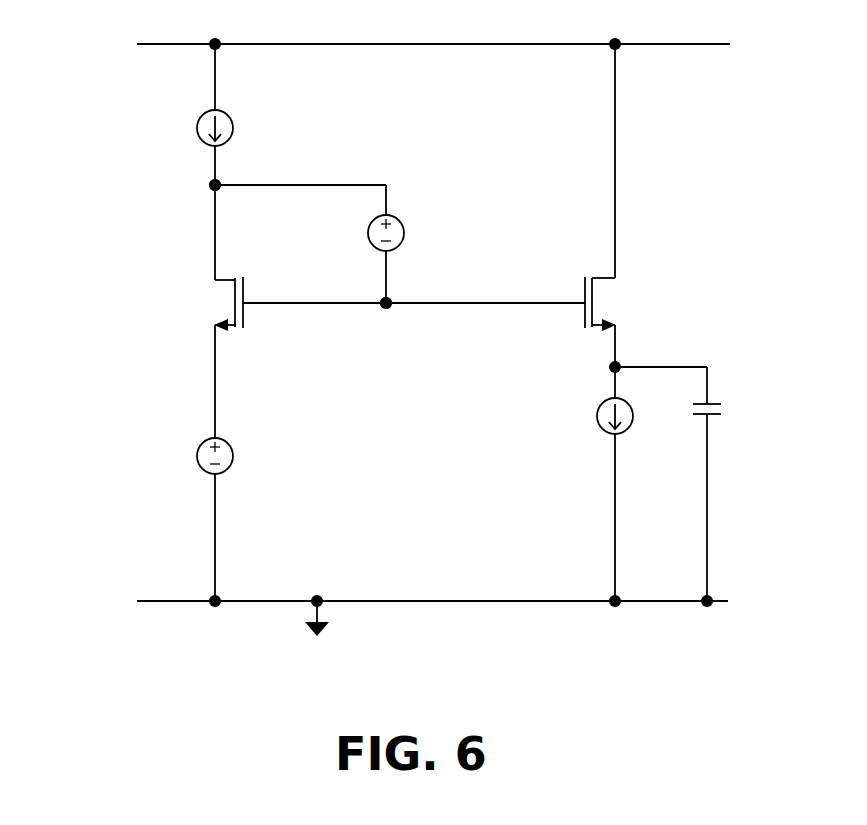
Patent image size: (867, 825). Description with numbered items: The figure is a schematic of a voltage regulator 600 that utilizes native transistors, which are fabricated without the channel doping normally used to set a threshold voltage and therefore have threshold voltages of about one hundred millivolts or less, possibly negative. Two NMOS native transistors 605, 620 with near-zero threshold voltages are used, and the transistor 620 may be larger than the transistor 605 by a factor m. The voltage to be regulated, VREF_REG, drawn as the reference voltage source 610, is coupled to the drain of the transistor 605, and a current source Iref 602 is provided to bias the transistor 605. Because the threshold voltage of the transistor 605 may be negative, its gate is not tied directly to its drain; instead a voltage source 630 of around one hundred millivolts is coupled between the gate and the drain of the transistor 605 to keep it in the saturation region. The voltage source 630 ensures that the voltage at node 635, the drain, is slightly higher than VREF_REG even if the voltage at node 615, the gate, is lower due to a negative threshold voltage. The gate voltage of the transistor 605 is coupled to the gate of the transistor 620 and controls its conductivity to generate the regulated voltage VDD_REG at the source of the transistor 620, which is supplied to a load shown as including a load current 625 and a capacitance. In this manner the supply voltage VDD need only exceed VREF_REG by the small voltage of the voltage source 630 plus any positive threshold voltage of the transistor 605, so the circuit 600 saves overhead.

The voltage regulator 600 is at (407, 331).
The current source Iref 602 is at (247, 128).
The native transistor 605 is at (250, 309).
The reference voltage source VREF_REG 610 is at (264, 448).
The node 615 is at (387, 310).
The native transistor 620 is at (581, 309).
The load current 625 is at (594, 423).
The voltage source 630 is at (570, 331).
The node 635 is at (208, 185).